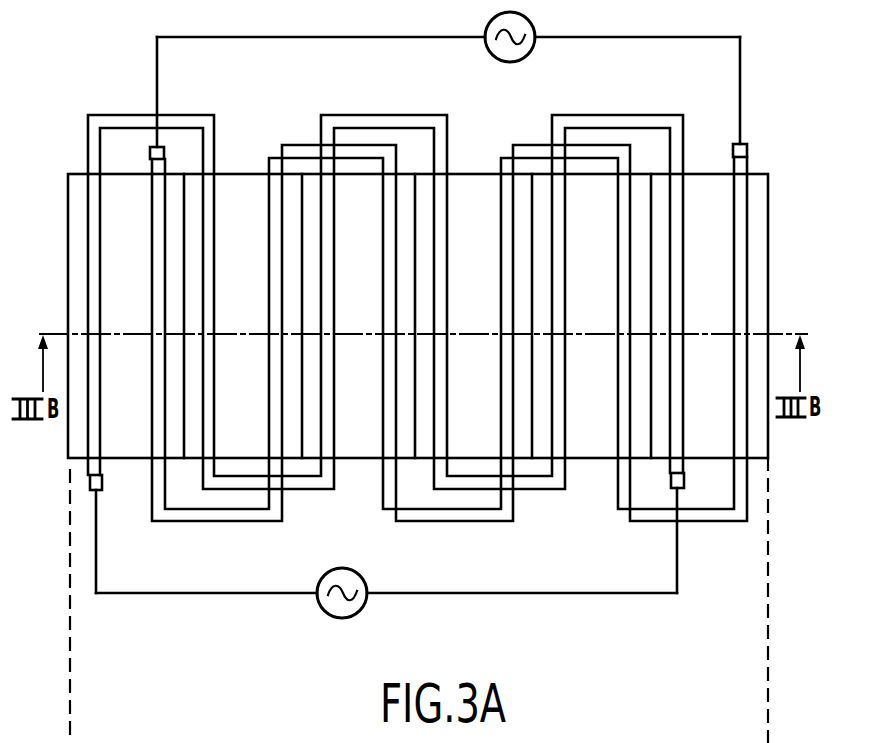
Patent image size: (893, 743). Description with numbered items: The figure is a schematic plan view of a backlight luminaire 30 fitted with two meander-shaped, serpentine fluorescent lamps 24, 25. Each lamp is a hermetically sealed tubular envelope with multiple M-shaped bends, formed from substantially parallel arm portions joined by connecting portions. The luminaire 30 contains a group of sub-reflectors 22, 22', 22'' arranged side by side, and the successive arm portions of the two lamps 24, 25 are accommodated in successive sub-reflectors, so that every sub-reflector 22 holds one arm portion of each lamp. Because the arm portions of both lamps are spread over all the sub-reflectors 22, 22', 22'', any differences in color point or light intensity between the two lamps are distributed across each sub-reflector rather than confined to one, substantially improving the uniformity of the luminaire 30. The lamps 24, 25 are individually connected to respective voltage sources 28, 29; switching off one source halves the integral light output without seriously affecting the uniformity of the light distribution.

The sub-reflector 22 is at (398, 316).
The sub-reflector 22' is at (339, 316).
The sub-reflector 22'' is at (354, 343).
The meander-shaped fluorescent lamp 24 is at (90, 153).
The meander-shaped fluorescent lamp 25 is at (743, 165).
The voltage source 28 is at (532, 22).
The voltage source 29 is at (323, 612).
The backlight luminaire 30 is at (449, 600).